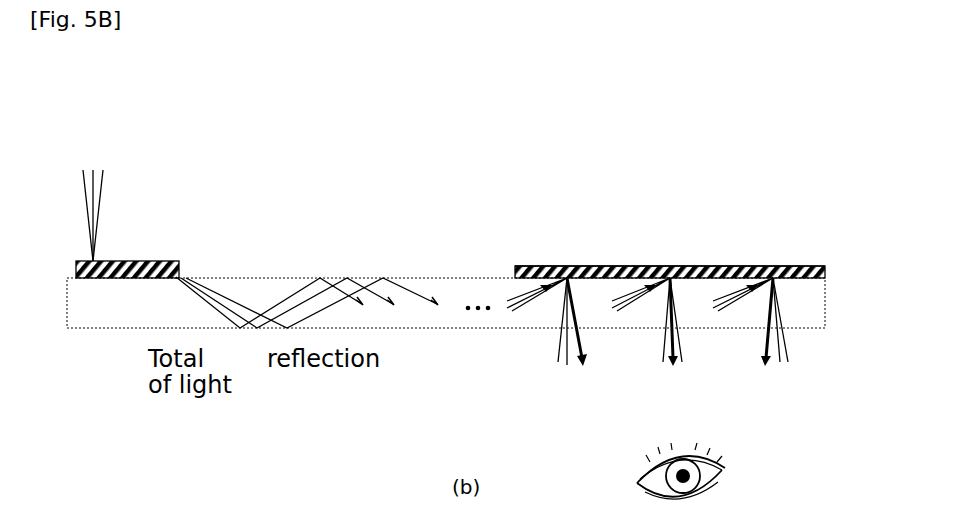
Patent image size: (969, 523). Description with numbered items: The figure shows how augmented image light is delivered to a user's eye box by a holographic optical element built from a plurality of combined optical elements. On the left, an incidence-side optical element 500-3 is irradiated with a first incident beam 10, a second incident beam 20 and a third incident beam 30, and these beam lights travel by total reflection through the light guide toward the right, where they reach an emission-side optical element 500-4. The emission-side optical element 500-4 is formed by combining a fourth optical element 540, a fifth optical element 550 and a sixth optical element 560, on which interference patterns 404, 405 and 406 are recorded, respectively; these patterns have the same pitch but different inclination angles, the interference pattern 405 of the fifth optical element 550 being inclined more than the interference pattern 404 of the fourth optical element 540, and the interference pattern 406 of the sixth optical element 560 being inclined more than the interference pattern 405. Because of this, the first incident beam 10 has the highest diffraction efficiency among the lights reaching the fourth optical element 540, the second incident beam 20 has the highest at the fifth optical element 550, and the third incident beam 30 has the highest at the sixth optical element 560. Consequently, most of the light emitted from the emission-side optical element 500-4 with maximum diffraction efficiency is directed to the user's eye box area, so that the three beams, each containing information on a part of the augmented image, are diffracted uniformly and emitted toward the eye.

The first incident beam 10 is at (80, 177).
The second incident beam 20 is at (91, 172).
The third incident beam 30 is at (105, 183).
The incidence-side optical element 500-3 is at (183, 263).
The emission-side optical element 500-4 is at (752, 180).
The interference pattern 404 is at (538, 264).
The fourth optical element 540 is at (589, 265).
The fifth optical element 550 is at (666, 265).
The sixth optical element 560 is at (771, 265).
The interference pattern 406 is at (808, 266).
The interference pattern 405 is at (693, 280).